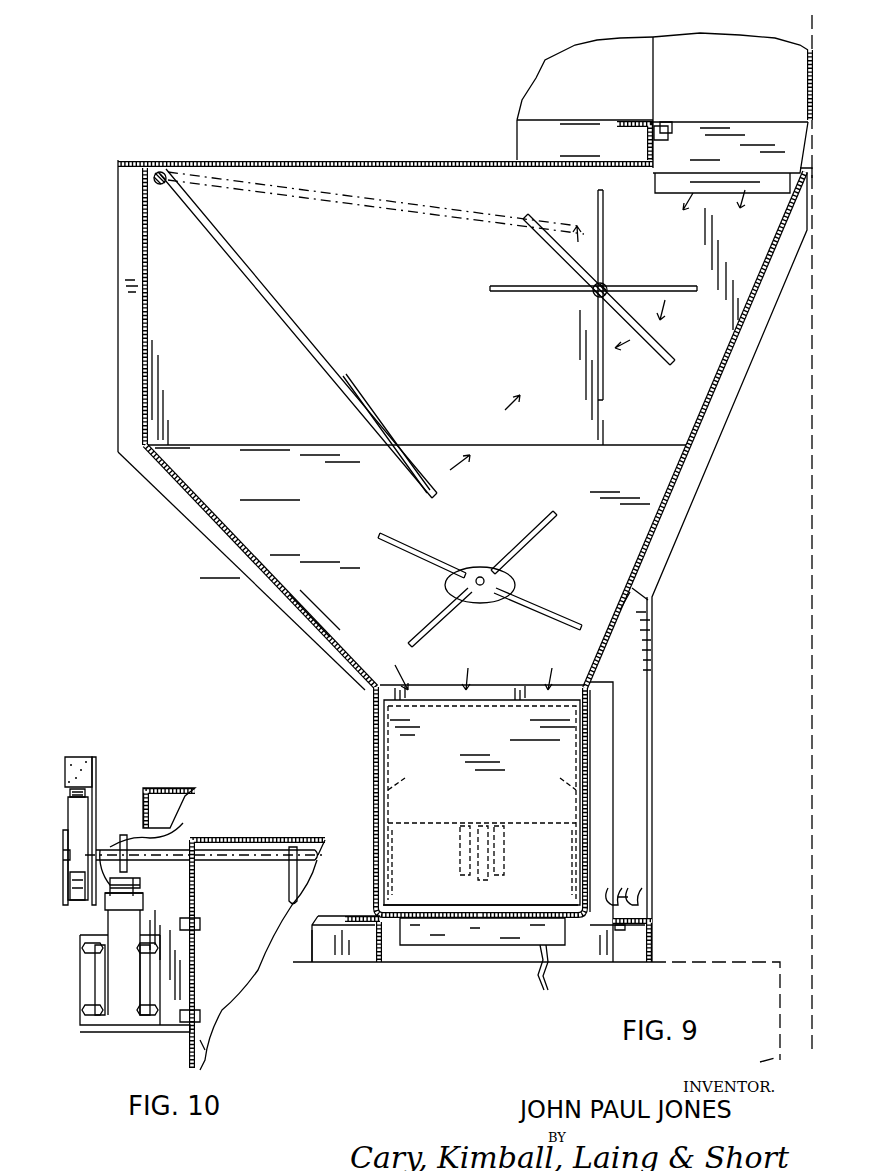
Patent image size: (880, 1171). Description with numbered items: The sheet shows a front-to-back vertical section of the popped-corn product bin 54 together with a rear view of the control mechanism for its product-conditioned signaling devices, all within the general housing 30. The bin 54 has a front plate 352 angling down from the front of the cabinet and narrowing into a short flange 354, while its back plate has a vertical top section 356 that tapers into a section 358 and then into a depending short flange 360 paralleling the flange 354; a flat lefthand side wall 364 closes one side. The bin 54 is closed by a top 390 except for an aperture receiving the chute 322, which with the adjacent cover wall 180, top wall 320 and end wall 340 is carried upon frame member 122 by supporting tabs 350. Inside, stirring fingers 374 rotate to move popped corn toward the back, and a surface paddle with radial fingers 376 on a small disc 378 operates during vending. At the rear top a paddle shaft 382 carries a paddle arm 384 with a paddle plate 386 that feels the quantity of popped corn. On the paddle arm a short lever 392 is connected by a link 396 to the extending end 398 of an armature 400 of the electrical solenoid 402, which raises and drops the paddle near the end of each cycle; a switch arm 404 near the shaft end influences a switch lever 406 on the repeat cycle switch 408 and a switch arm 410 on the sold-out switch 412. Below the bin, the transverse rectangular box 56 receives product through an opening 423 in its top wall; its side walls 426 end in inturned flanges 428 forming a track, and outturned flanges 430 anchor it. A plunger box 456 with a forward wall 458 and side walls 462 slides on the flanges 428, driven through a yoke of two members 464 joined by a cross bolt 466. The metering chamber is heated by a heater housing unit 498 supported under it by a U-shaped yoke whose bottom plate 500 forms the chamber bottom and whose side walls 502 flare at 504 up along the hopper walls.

In FIG. 9, the housing 30 is at (808, 355).
In FIG. 9, the bin 54 is at (325, 256).
In FIG. 9, the transverse rectangular box 56 is at (595, 751).
In FIG. 9, the frame member 122 is at (632, 128).
In FIG. 10, the frame member 122 is at (168, 788).
In FIG. 9, the cover wall 180 is at (568, 86).
In FIG. 9, the top wall 320 is at (718, 42).
In FIG. 9, the chute 322 is at (795, 130).
In FIG. 9, the end wall 340 is at (806, 50).
In FIG. 9, the supporting tabs 350 is at (656, 122).
In FIG. 9, the front plate 352 is at (690, 445).
In FIG. 9, the short flange 354 is at (615, 683).
In FIG. 9, the vertical top section 356 is at (118, 300).
In FIG. 9, the tapering section 358 is at (230, 545).
In FIG. 9, the depending short flange 360 is at (372, 690).
In FIG. 10, the flat lefthand side wall 364 is at (206, 1040).
In FIG. 9, the stirring fingers 374 is at (605, 243).
In FIG. 9, the radial fingers 376 is at (425, 560).
In FIG. 9, the small disc 378 is at (518, 580).
In FIG. 10, the paddle shaft 382 is at (258, 850).
In FIG. 9, the paddle arm 384 is at (300, 318).
In FIG. 10, the paddle arm 384 is at (288, 870).
In FIG. 9, the paddle plate 386 is at (378, 412).
In FIG. 9, the top 390 is at (278, 160).
In FIG. 10, the top 390 is at (318, 838).
In FIG. 10, the short lever 392 is at (123, 835).
In FIG. 10, the link 396 is at (184, 824).
In FIG. 10, the extending end of armature 398 is at (145, 880).
In FIG. 10, the armature 400 is at (125, 926).
In FIG. 10, the electrical solenoid 402 is at (93, 982).
In FIG. 10, the switch arm 404 is at (72, 818).
In FIG. 10, the switch lever 406 is at (72, 896).
In FIG. 10, the repeat cycle switch 408 is at (64, 884).
In FIG. 10, the switch arm 410 is at (70, 793).
In FIG. 10, the sold-out switch 412 is at (78, 758).
In FIG. 9, the opening 423 is at (492, 700).
In FIG. 9, the side walls 426 is at (374, 735).
In FIG. 9, the inturned flanges 428 is at (400, 912).
In FIG. 9, the outturned flanges 430 is at (330, 914).
In FIG. 9, the plunger box 456 is at (592, 720).
In FIG. 9, the forward wall 458 is at (482, 802).
In FIG. 9, the side walls 462 is at (395, 786).
In FIG. 9, the yoke members 464 is at (433, 830).
In FIG. 9, the cross bolt 466 is at (495, 828).
In FIG. 9, the heater housing unit 498 is at (460, 945).
In FIG. 9, the bottom plate 500 is at (425, 935).
In FIG. 9, the side walls 502 is at (376, 768).
In FIG. 9, the flared portions 504 is at (640, 592).